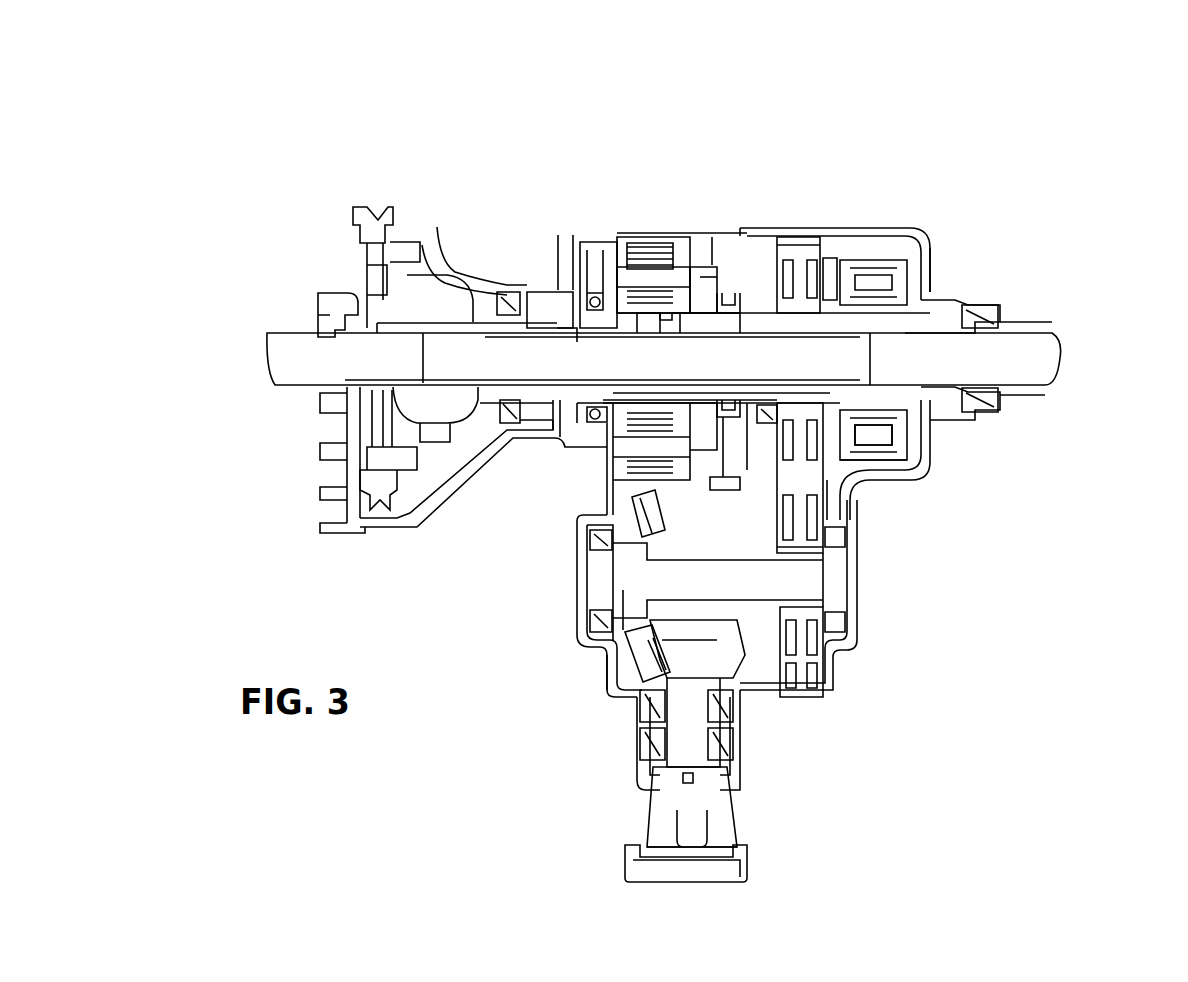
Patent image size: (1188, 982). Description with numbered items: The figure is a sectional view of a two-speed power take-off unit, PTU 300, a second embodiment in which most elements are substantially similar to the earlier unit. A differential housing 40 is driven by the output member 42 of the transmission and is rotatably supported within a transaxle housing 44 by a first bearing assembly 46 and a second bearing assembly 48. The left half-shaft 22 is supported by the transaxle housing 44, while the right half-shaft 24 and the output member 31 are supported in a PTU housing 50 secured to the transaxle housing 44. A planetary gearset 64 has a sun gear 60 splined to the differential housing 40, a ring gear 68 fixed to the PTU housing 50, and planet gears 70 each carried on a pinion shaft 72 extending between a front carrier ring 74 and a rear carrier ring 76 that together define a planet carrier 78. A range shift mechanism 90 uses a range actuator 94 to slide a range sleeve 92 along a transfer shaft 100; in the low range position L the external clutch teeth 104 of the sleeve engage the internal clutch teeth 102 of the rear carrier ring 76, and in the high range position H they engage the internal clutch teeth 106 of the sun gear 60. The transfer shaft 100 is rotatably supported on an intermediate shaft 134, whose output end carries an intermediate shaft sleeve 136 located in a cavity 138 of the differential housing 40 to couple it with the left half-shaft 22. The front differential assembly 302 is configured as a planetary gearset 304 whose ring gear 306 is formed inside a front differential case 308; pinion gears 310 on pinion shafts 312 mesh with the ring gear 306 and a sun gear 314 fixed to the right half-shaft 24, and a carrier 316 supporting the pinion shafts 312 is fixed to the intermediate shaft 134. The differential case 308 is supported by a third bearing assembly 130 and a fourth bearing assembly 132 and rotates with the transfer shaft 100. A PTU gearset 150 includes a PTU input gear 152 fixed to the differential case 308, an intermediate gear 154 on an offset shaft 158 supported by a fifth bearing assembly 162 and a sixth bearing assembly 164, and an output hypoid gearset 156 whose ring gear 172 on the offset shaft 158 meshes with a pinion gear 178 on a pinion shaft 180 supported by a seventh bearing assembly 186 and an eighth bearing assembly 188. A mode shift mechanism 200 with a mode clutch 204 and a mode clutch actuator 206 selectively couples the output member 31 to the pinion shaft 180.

The left half-shaft 22 is at (288, 371).
The right half-shaft 24 is at (1037, 367).
The PTU 300 is at (1062, 160).
The output member 31 is at (590, 787).
The differential housing 40 is at (437, 272).
The output member 42 is at (378, 206).
The transaxle housing 44 is at (465, 268).
The first bearing assembly 46 is at (327, 327).
The second bearing assembly 48 is at (505, 292).
The PTU housing 50 is at (577, 240).
The sun gear 60 is at (575, 345).
The planetary gearset 64 is at (635, 237).
The ring gear 68 is at (642, 250).
The planet gears 70 is at (670, 262).
The pinion shaft 72 is at (715, 237).
The front carrier ring 74 is at (613, 240).
The rear carrier ring 76 is at (682, 269).
The planet carrier 78 is at (699, 277).
The range shift mechanism 90 is at (753, 463).
The range sleeve 92 is at (742, 292).
The range actuator 94 is at (720, 490).
The transfer shaft 100 is at (733, 327).
The internal clutch teeth 102 is at (670, 318).
The external clutch teeth 104 is at (687, 403).
The internal clutch teeth 106 is at (658, 316).
The third bearing assembly 130 is at (785, 420).
The fourth bearing assembly 132 is at (965, 410).
The intermediate shaft 134 is at (557, 290).
The intermediate shaft sleeve 136 is at (403, 388).
The cavity 138 is at (447, 320).
The PTU gearset 150 is at (892, 535).
The PTU input gear 152 is at (793, 250).
The intermediate gear 154 is at (812, 488).
The output hypoid gearset 156 is at (593, 657).
The offset shaft 158 is at (833, 572).
The fifth bearing assembly 162 is at (848, 625).
The sixth bearing assembly 164 is at (600, 620).
The ring gear 172 is at (637, 645).
The pinion gear 178 is at (723, 653).
The pinion shaft 180 is at (705, 678).
The seventh bearing assembly 186 is at (735, 707).
The eighth bearing assembly 188 is at (725, 745).
The mode shift mechanism 200 is at (678, 792).
The mode clutch 204 is at (707, 763).
The mode clutch actuator 206 is at (690, 780).
The front differential assembly 302 is at (929, 230).
The planetary gearset 304 is at (892, 248).
The ring gear 306 is at (847, 257).
The front differential case 308 is at (832, 257).
The pinion gears 310 is at (893, 458).
The pinion shaft 312 is at (888, 437).
The sun gear 314 is at (900, 323).
The carrier 316 is at (925, 410).
The high range position H is at (706, 140).
The low range position L is at (732, 117).